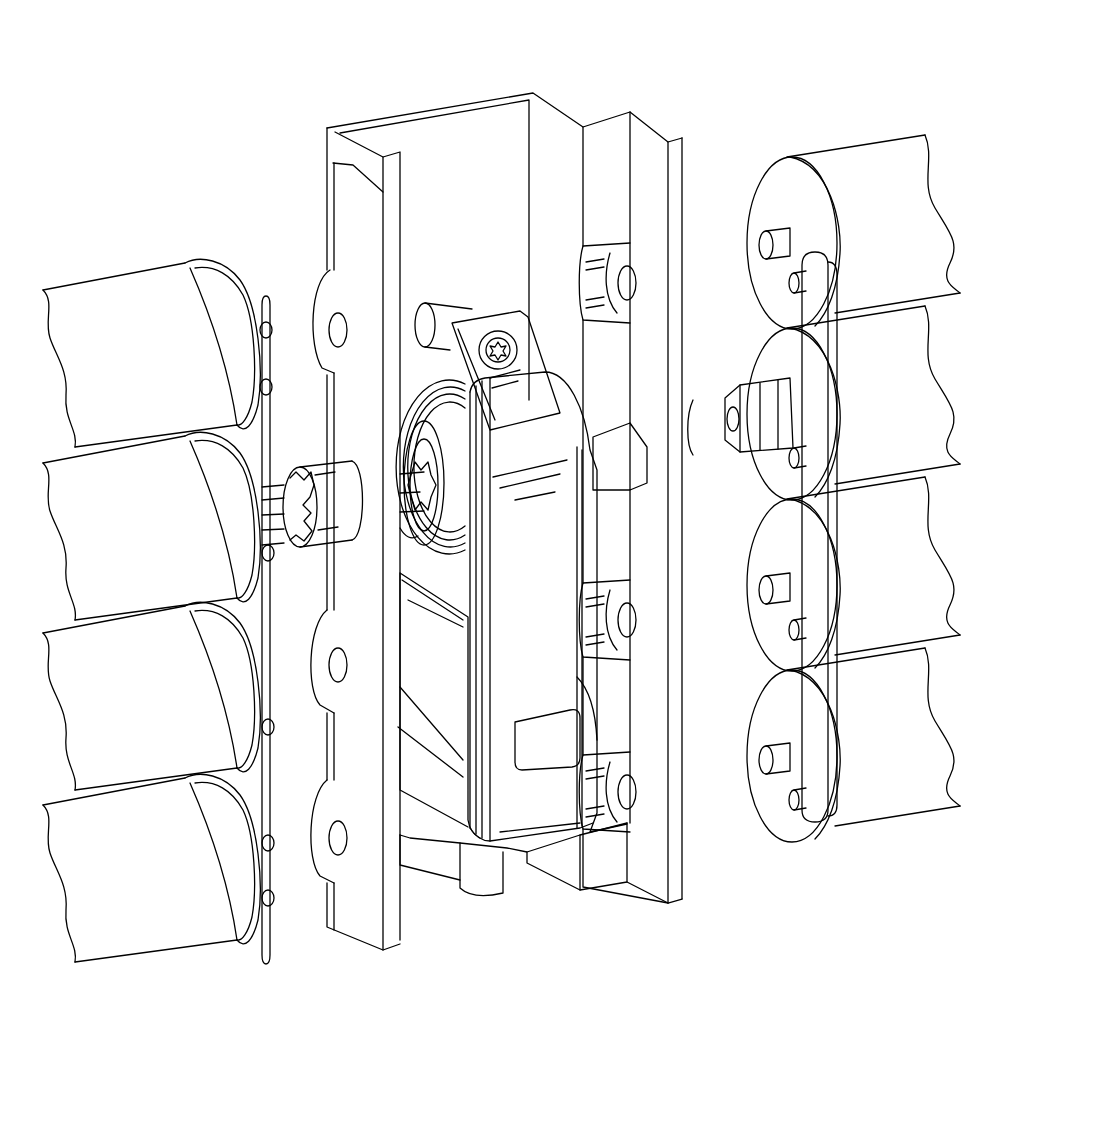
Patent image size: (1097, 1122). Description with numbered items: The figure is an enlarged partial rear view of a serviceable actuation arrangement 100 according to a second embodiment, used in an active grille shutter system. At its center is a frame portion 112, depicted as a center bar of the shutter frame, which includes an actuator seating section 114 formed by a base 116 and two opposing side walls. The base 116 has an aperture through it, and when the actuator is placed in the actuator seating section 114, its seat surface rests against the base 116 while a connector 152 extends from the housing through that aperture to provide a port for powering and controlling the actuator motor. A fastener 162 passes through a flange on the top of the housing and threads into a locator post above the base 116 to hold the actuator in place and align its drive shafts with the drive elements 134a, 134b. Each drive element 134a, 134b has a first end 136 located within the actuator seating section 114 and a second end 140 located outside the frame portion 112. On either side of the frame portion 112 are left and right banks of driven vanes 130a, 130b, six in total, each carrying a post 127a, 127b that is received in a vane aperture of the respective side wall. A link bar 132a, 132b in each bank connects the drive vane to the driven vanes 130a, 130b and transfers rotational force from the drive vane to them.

The serviceable actuation arrangement 100 is at (303, 55).
The frame portion 112 is at (487, 128).
The actuator seating section 114 is at (420, 364).
The base 116 is at (420, 847).
The connector 152 is at (487, 888).
The fastener 162 is at (506, 333).
The first end 136 is at (407, 533).
The second end 140 is at (298, 540).
The drive element 134a is at (333, 545).
The drive element 134b is at (692, 425).
The link bar 132a is at (300, 430).
The link bar 132b is at (820, 343).
The post 127a is at (272, 330).
The post 127b is at (762, 243).
The driven vane 130a is at (128, 252).
The driven vane 130b is at (836, 108).